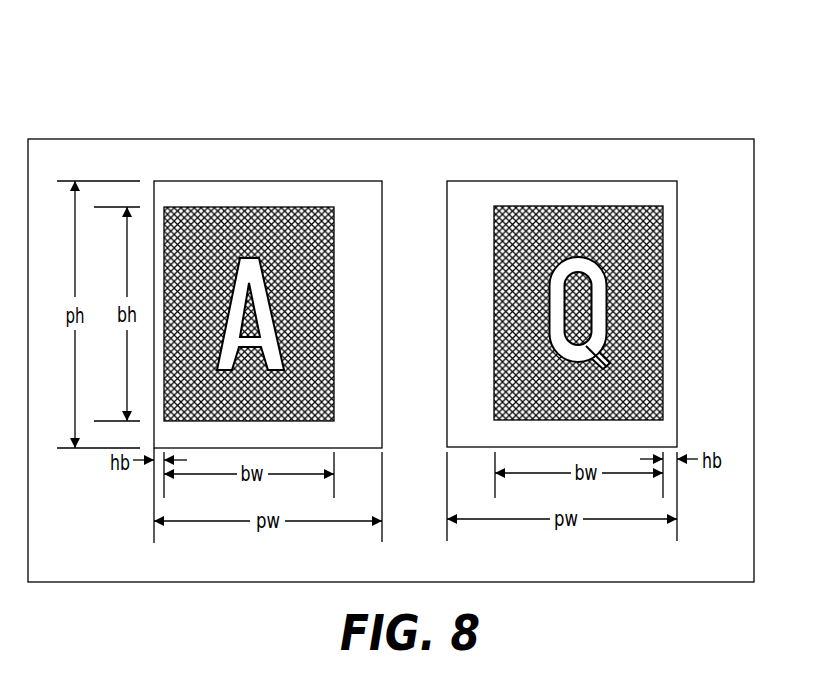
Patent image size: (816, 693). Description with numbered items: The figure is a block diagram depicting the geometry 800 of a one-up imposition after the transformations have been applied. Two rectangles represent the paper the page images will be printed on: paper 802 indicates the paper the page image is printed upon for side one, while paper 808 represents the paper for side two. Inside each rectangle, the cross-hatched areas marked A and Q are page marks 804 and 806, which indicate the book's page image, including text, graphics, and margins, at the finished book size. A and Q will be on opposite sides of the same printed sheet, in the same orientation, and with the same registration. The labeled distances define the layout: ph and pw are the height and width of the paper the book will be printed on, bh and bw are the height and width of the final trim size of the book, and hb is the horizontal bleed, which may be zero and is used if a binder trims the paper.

The geometry 800 is at (175, 139).
The paper 802 is at (237, 181).
The page mark 804 is at (313, 207).
The page mark 806 is at (590, 206).
The paper 808 is at (490, 181).